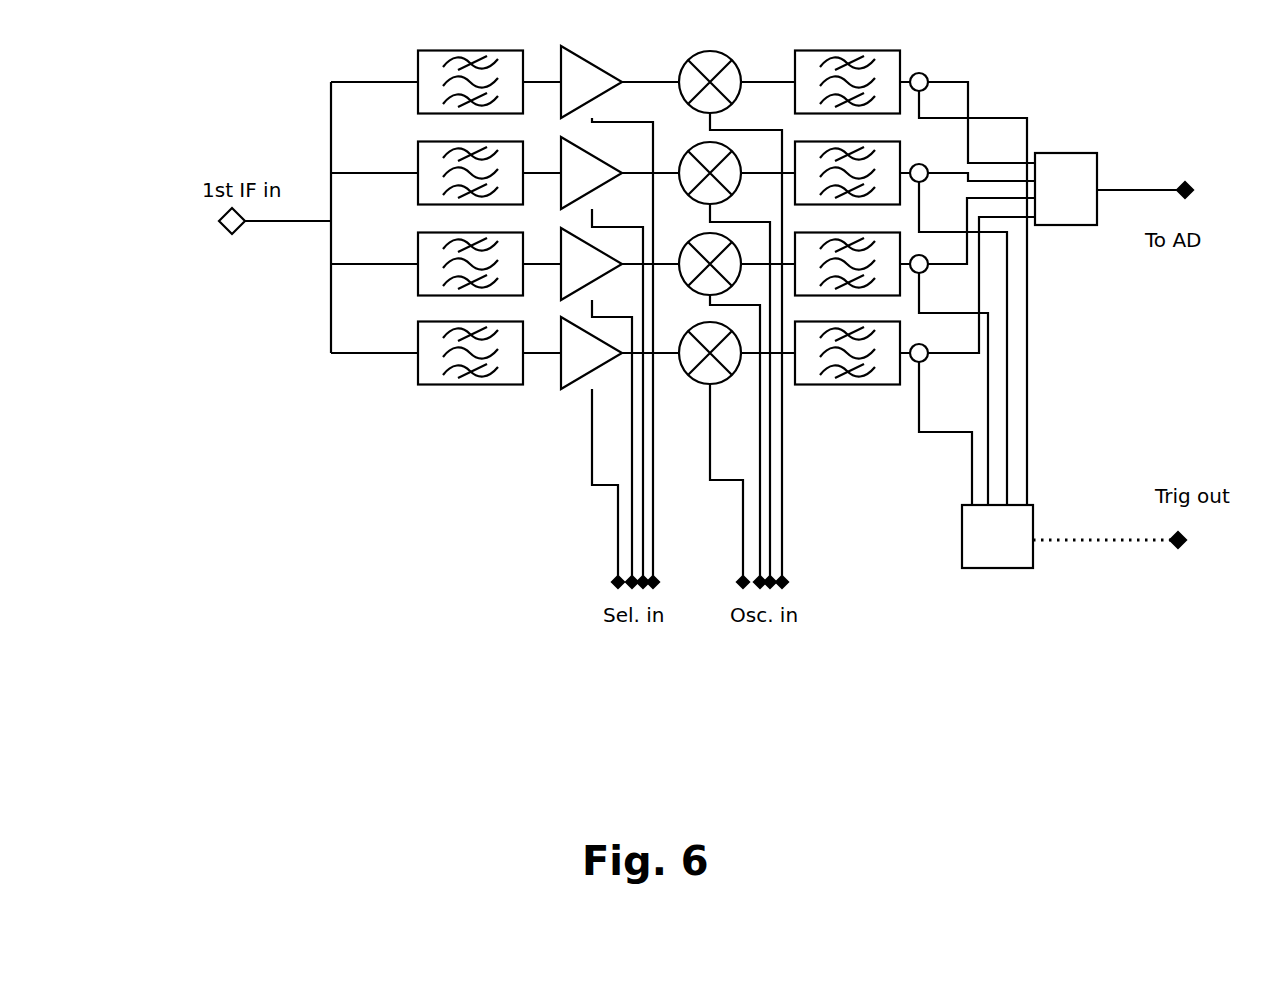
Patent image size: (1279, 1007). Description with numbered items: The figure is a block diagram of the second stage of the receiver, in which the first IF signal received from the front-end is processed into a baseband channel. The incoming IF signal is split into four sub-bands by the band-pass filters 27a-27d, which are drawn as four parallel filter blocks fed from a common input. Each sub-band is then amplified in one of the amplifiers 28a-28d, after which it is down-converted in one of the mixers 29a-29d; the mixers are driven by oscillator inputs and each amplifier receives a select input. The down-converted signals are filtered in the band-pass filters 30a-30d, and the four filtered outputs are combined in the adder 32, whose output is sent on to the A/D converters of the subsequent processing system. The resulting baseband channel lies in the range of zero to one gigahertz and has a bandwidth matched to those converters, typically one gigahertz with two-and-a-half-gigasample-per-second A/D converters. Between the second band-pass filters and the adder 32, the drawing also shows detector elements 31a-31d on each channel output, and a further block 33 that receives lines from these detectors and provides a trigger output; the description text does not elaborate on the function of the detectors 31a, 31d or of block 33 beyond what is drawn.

The band-pass filter 27a is at (470, 66).
The band-pass filter 27d is at (470, 370).
The amplifier 28a is at (591, 68).
The amplifier 28d is at (591, 374).
The mixer 29a is at (710, 66).
The mixer 29d is at (710, 377).
The band-pass filter 30a is at (847, 66).
The band-pass filter 30d is at (847, 377).
The detector (channel a) 31a is at (946, 67).
The detector (channel d) 31d is at (941, 367).
The adder 32 is at (1066, 189).
The trigger generator 33 is at (997, 536).